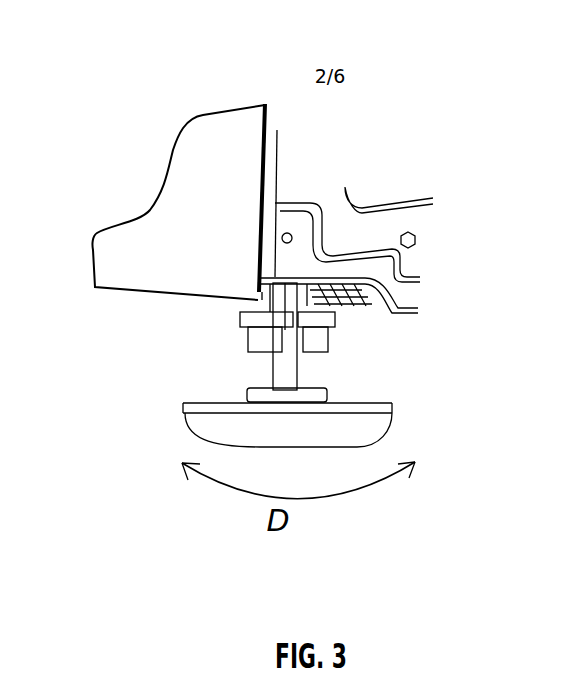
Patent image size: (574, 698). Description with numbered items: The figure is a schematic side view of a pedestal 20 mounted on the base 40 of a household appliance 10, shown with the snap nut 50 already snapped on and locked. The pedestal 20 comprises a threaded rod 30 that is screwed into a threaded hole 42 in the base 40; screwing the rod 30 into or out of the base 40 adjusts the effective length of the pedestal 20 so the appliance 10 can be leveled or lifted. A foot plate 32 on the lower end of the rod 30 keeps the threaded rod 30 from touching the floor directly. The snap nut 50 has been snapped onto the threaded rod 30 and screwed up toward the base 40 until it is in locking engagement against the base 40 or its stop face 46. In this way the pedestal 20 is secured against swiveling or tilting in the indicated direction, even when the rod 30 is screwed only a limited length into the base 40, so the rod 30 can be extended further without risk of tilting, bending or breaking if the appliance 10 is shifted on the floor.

The household appliance 10 is at (333, 148).
The pedestal 20 is at (210, 388).
The threaded rod 30 is at (285, 367).
The foot plate 32 is at (337, 423).
The base 40 is at (297, 255).
The threaded hole 42 is at (305, 280).
The stop face 46 is at (305, 278).
The snap nut 50 is at (263, 333).